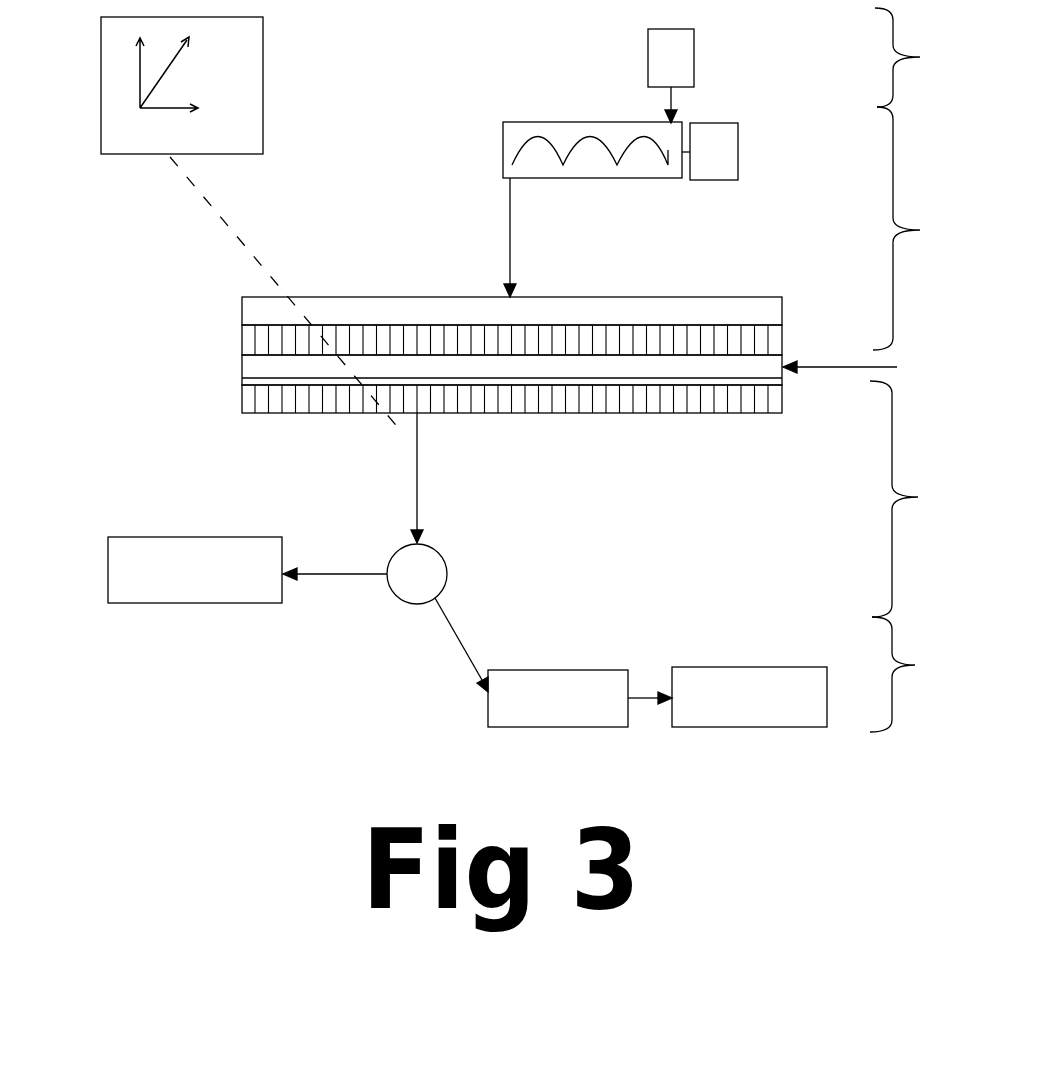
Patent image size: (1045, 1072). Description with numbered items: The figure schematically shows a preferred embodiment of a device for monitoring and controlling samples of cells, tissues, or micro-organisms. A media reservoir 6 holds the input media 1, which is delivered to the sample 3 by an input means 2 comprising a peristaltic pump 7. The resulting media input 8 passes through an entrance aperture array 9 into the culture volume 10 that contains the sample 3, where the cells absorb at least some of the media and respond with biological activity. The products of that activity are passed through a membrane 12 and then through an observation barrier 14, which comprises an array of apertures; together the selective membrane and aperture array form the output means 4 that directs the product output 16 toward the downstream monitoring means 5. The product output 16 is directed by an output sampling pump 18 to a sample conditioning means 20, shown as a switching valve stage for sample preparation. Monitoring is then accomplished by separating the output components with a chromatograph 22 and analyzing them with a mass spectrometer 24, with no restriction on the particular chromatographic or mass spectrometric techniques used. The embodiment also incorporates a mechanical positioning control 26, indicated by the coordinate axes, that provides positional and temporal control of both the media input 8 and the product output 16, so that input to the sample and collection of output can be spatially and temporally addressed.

The input media 1 is at (915, 57).
The input means 2 is at (914, 228).
The sample 3 is at (867, 372).
The output means 4 is at (911, 499).
The monitoring means 5 is at (910, 674).
The media reservoir 6 is at (717, 76).
The peristaltic pump 7 is at (685, 169).
The media input 8 is at (582, 237).
The entrance aperture array 9 is at (404, 315).
The culture volume 10 is at (421, 351).
The membrane 12 is at (443, 381).
The observation barrier 14 is at (406, 411).
The product output 16 is at (523, 478).
The output sampling pump 18 is at (247, 549).
The sample conditioning means 20 is at (447, 574).
The chromatograph 22 is at (531, 662).
The mass spectrometer 24 is at (727, 676).
The mechanical positioning control 26 is at (250, 223).